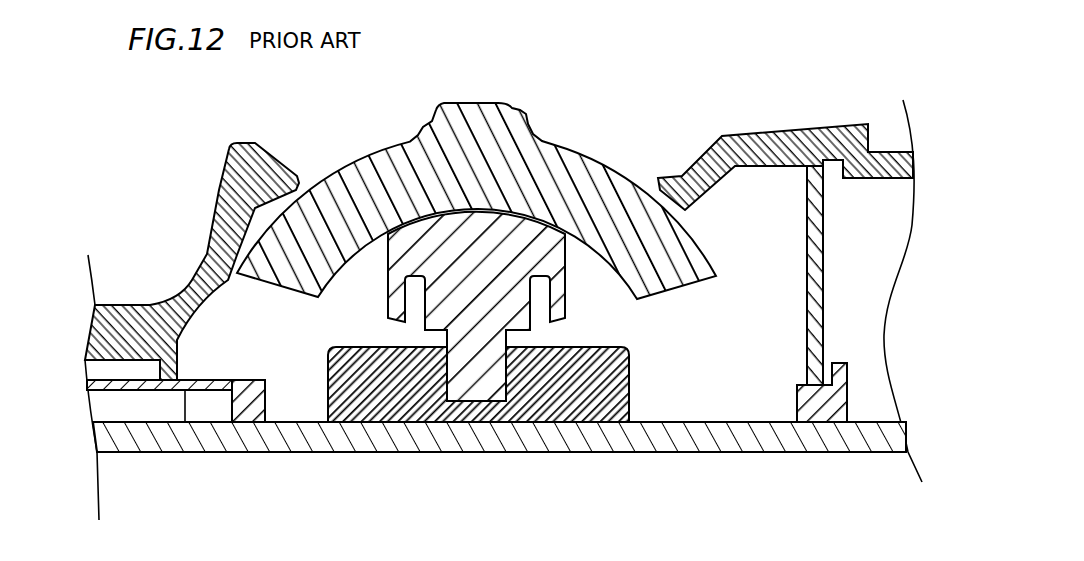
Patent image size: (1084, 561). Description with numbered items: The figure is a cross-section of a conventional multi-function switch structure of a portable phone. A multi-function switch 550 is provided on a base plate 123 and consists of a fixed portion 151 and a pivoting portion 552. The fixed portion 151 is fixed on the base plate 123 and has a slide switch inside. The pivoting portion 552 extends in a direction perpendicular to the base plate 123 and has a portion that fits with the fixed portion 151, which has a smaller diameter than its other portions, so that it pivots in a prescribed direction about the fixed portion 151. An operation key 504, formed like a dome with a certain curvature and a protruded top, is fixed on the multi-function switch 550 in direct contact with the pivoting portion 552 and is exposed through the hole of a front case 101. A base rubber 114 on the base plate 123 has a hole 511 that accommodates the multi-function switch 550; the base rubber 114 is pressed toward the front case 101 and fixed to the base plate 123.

The front case 101 is at (246, 170).
The operation key 504 is at (546, 168).
The pivoting portion 552 is at (485, 373).
The fixed portion 151 is at (543, 386).
The multi-function switch 550 is at (478, 374).
The hole 511 is at (268, 398).
The base plate 123 is at (688, 440).
The base rubber 114 is at (183, 390).